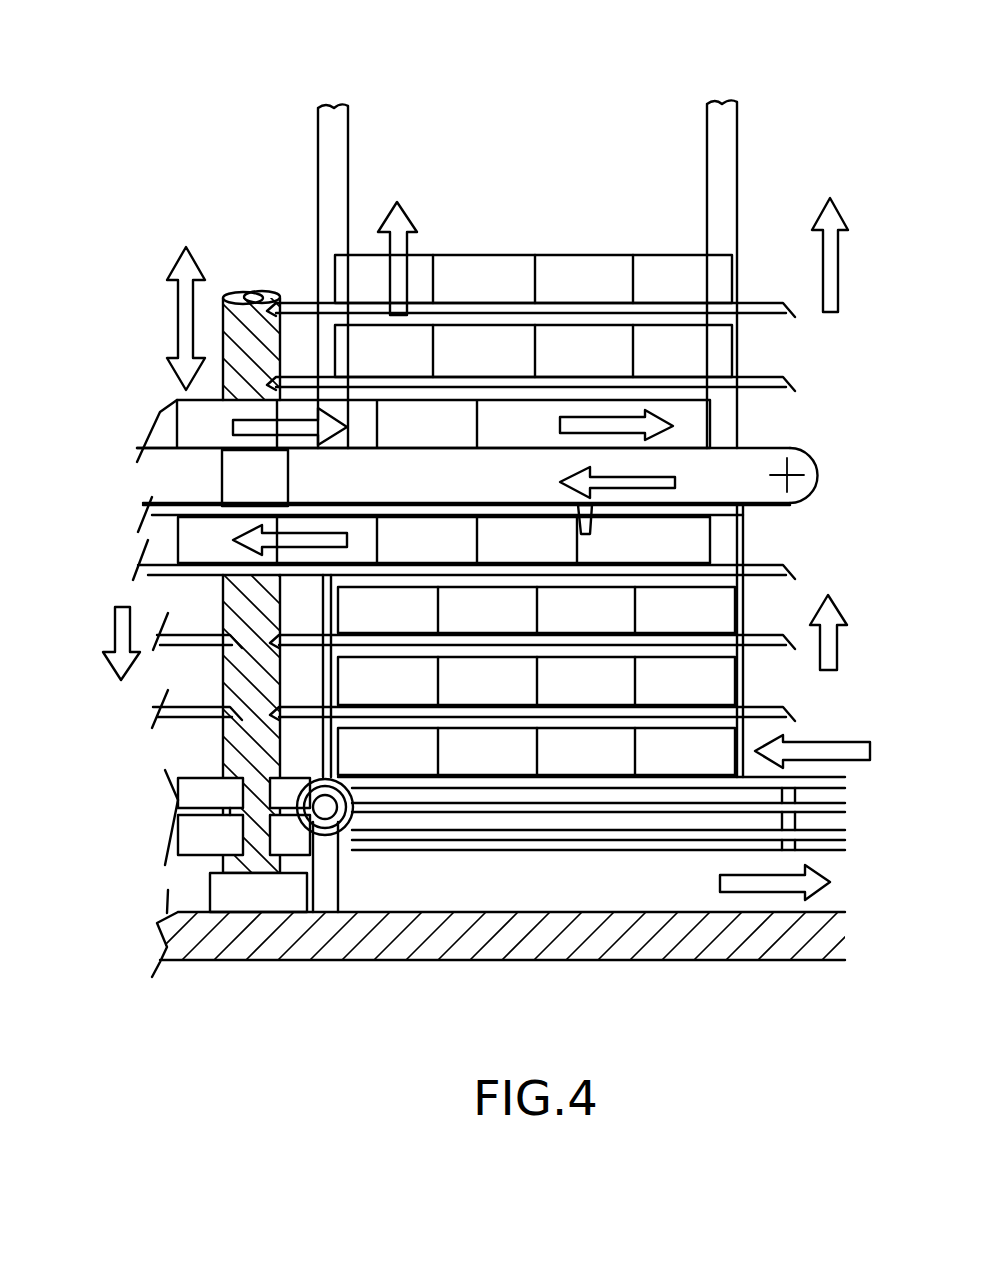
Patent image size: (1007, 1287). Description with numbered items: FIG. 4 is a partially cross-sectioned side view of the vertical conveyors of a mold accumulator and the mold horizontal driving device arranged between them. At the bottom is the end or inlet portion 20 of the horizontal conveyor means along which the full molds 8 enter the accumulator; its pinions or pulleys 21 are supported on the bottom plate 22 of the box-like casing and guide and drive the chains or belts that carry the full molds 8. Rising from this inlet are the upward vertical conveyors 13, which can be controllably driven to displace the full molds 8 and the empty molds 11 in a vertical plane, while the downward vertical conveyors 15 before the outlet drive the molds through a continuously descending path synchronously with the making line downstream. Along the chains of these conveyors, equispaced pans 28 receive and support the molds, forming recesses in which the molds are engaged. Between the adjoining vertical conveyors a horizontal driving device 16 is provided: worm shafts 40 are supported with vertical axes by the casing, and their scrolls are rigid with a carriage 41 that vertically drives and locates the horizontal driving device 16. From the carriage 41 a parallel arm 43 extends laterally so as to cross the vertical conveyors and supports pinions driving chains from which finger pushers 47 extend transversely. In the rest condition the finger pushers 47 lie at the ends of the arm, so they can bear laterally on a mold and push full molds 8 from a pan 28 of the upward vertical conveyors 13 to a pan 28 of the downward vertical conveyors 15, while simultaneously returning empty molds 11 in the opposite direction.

The vertical conveyors 13 is at (777, 58).
The empty molds 11 is at (717, 272).
The worm shafts 40 is at (248, 312).
The carriage 41 is at (272, 492).
The parallel arm 43 is at (742, 471).
The horizontal driving device 16 is at (830, 465).
The finger pushers 47 is at (587, 515).
The full molds 8 is at (540, 539).
The pans 28 is at (772, 567).
The vertical conveyors 15 is at (138, 827).
The inlet portion 20 is at (632, 833).
The pinions or pulleys 21 is at (345, 807).
The bottom plate 22 is at (365, 930).